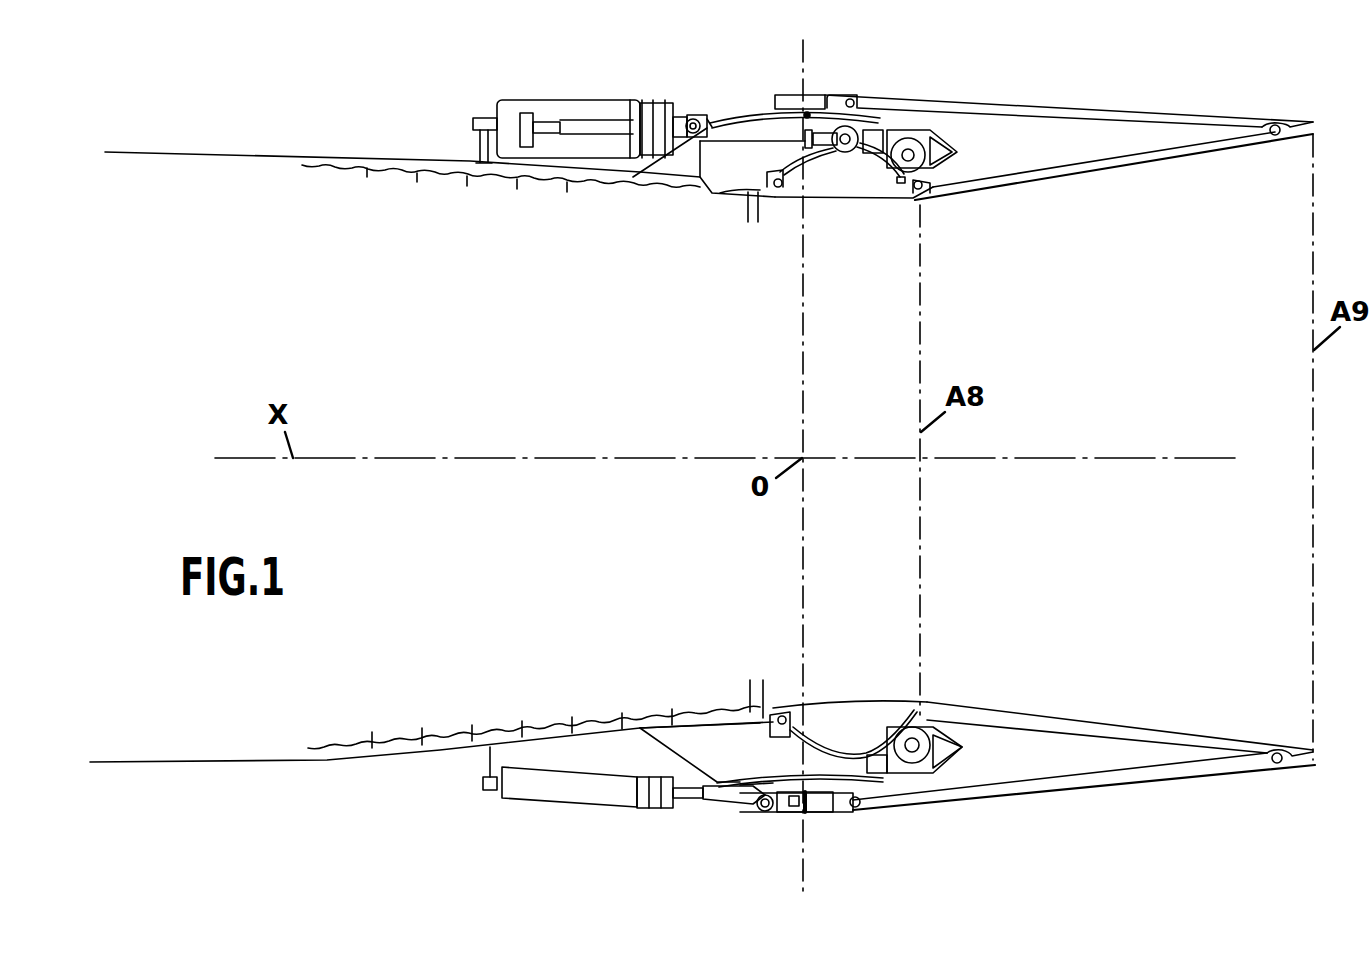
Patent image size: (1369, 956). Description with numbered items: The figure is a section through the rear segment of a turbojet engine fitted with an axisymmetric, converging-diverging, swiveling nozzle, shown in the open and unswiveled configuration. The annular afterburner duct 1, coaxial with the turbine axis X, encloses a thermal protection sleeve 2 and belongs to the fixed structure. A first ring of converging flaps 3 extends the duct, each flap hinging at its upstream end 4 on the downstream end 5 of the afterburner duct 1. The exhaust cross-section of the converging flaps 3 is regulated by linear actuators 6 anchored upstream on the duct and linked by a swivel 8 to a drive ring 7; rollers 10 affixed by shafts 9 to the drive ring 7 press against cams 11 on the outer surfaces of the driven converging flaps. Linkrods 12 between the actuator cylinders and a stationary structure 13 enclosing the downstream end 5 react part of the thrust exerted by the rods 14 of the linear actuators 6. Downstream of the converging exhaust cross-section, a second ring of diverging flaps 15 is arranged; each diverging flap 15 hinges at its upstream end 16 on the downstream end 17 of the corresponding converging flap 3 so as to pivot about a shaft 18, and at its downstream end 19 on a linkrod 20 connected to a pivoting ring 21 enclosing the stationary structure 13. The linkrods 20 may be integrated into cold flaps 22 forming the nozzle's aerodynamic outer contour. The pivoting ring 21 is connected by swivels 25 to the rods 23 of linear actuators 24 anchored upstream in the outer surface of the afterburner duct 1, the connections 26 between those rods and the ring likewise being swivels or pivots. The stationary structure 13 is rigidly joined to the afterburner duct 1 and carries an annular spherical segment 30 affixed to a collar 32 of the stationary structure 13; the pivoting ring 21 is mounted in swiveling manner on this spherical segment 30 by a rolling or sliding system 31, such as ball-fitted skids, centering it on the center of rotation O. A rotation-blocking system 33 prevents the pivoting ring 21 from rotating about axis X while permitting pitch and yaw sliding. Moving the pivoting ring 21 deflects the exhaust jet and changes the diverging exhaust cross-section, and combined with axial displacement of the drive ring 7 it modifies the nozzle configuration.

The afterburner duct 1 is at (273, 152).
The thermal protection sleeve 2 is at (393, 173).
The converging flaps 3 is at (855, 200).
The upstream ends of converging flaps 4 is at (781, 197).
The downstream end of afterburner duct 5 is at (753, 188).
The linear actuators 6 is at (532, 103).
The drive ring 7 is at (927, 137).
The swivel 8 is at (847, 138).
The shafts 9 is at (913, 160).
The rollers 10 is at (916, 176).
The cams 11 is at (905, 185).
The linkrods 12 is at (612, 113).
The stationary structure 13 is at (697, 165).
The rods of linear actuators 14 is at (747, 137).
The diverging flaps 15 is at (1143, 163).
The upstream end of diverging flap 16 is at (962, 715).
The downstream end of converging flap 17 is at (892, 702).
The shaft 18 is at (920, 712).
The downstream end of diverging flap 19 is at (1252, 745).
The linkrod 20 is at (1020, 780).
The pivoting ring 21 is at (788, 92).
The cold flaps 22 is at (1163, 778).
The rods of linear actuators 23 is at (720, 802).
The linear actuators 24 is at (552, 802).
The swivels 25 is at (483, 777).
The connections 26 is at (766, 810).
The spherical segment 30 is at (742, 783).
The rolling or sliding system 31 is at (807, 793).
The collar 32 is at (707, 113).
The rotation-blocking system 33 is at (807, 115).